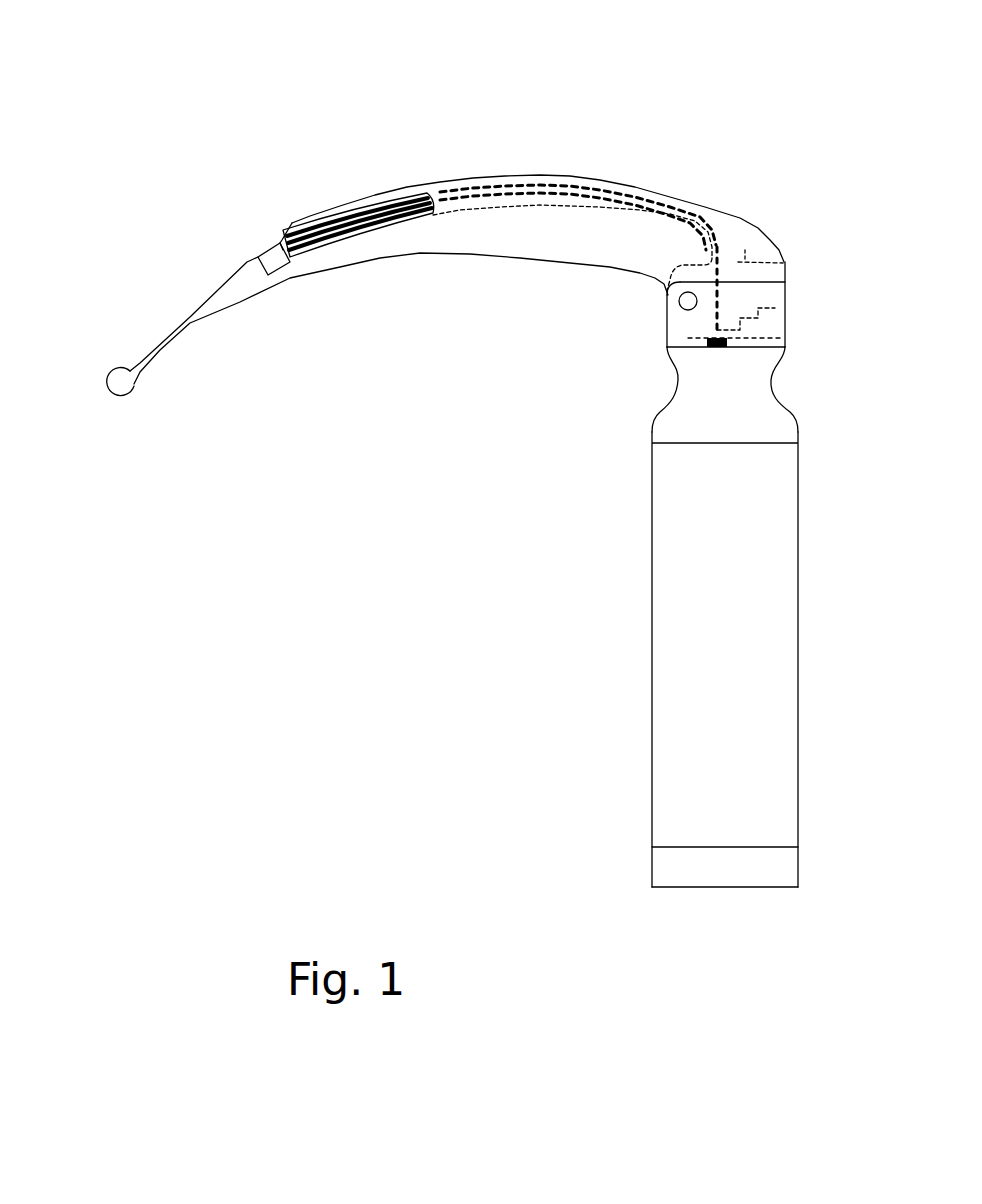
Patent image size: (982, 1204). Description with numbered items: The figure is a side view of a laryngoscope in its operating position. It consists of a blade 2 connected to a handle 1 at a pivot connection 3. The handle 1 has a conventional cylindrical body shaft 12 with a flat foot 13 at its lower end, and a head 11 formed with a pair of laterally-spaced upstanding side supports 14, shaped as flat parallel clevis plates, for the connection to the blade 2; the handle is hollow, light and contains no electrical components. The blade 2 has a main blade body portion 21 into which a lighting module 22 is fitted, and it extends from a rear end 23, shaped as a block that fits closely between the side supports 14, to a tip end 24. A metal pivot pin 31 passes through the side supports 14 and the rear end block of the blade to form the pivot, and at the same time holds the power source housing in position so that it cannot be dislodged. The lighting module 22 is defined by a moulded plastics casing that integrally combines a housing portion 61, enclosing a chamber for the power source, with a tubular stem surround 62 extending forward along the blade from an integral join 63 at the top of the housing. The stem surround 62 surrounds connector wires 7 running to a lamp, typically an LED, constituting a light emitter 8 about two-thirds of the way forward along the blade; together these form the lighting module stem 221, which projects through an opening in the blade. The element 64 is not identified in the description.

The handle 1 is at (602, 637).
The blade 2 is at (553, 136).
The pivot connection 3 is at (720, 288).
The connector wires 7 is at (460, 200).
The light emitter 8 is at (263, 250).
The head 11 is at (678, 372).
The cylindrical body shaft 12 is at (680, 663).
The flat foot 13 is at (683, 878).
The side supports 14 is at (763, 330).
The main blade body portion 21 is at (543, 247).
The lighting module 22 is at (675, 193).
The lighting module stem 221 is at (383, 200).
The rear end 23 is at (793, 221).
The tip end 24 is at (115, 320).
The pivot pin 31 is at (678, 309).
The housing portion 61 is at (770, 263).
The stem surround 62 is at (602, 193).
The integral join 63 is at (766, 264).
The light exit window 64 is at (283, 227).